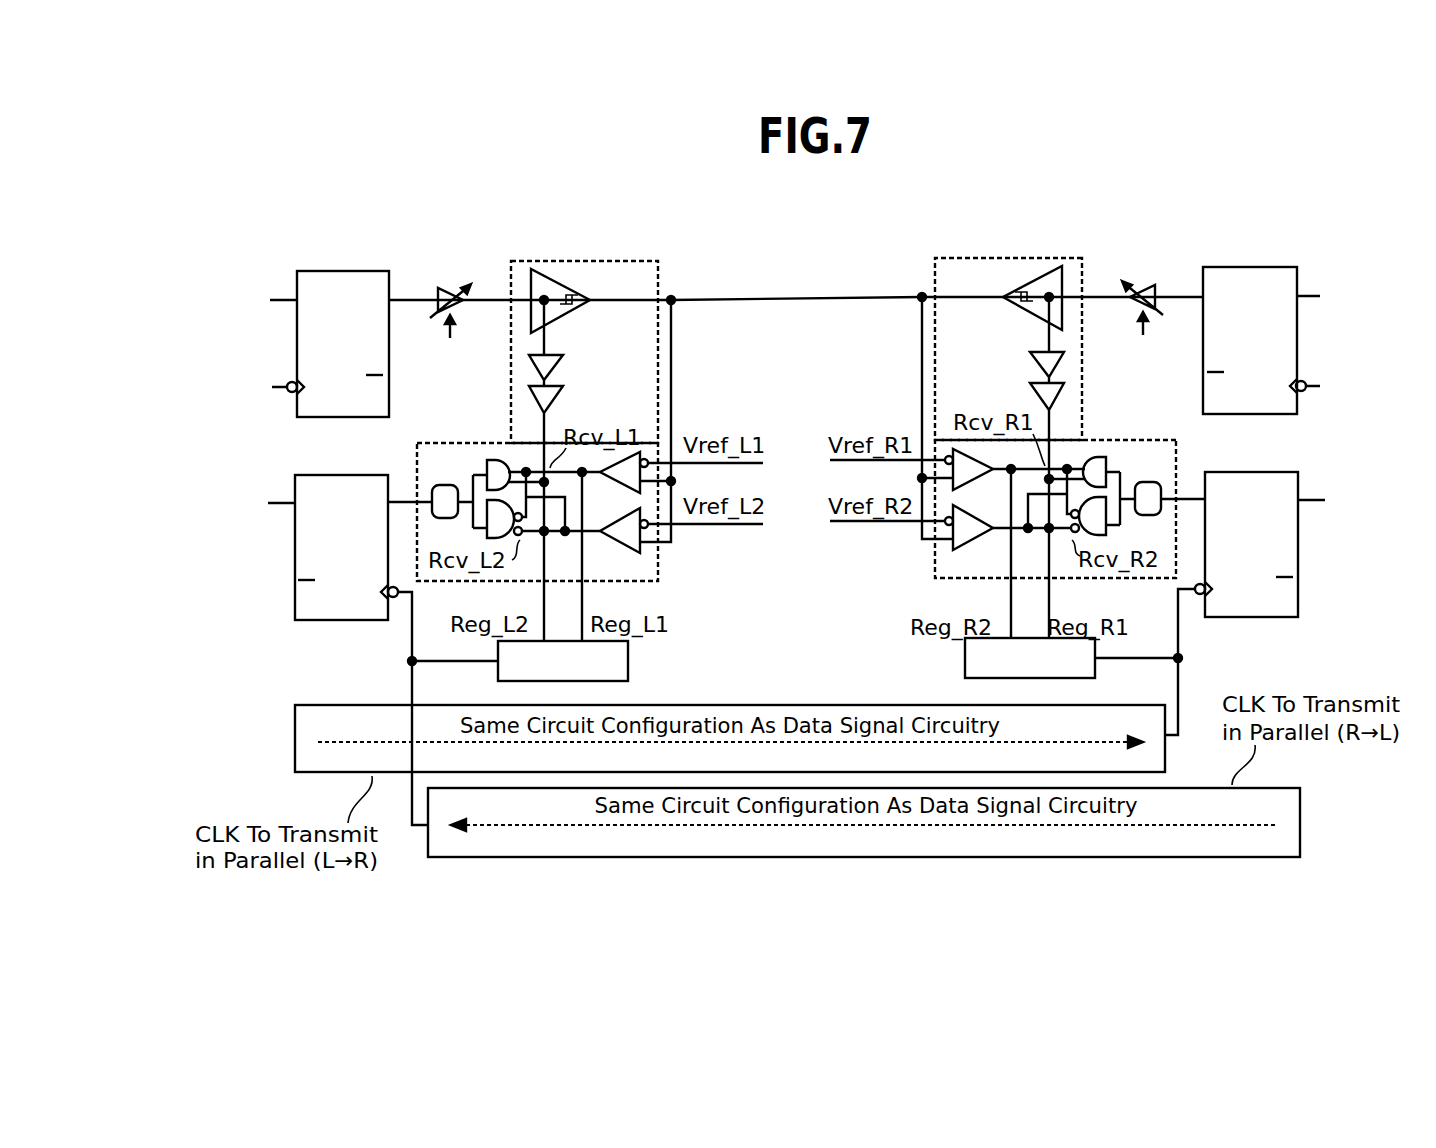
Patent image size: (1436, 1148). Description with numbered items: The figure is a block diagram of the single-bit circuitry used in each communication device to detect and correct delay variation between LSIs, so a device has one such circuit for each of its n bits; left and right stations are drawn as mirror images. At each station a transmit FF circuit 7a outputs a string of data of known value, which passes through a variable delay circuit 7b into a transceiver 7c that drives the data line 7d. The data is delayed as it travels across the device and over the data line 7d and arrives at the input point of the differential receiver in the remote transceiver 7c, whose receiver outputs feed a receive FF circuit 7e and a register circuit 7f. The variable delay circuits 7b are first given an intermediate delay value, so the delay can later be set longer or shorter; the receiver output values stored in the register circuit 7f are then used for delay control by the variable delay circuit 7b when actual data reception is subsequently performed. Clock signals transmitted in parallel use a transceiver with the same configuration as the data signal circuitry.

The transmit FF circuit 7a is at (347, 268).
The variable delay circuit 7b is at (445, 287).
The transceiver 7c is at (600, 260).
The data line 7d is at (815, 303).
The receive FF circuit 7e is at (338, 475).
The register circuit 7f is at (632, 661).